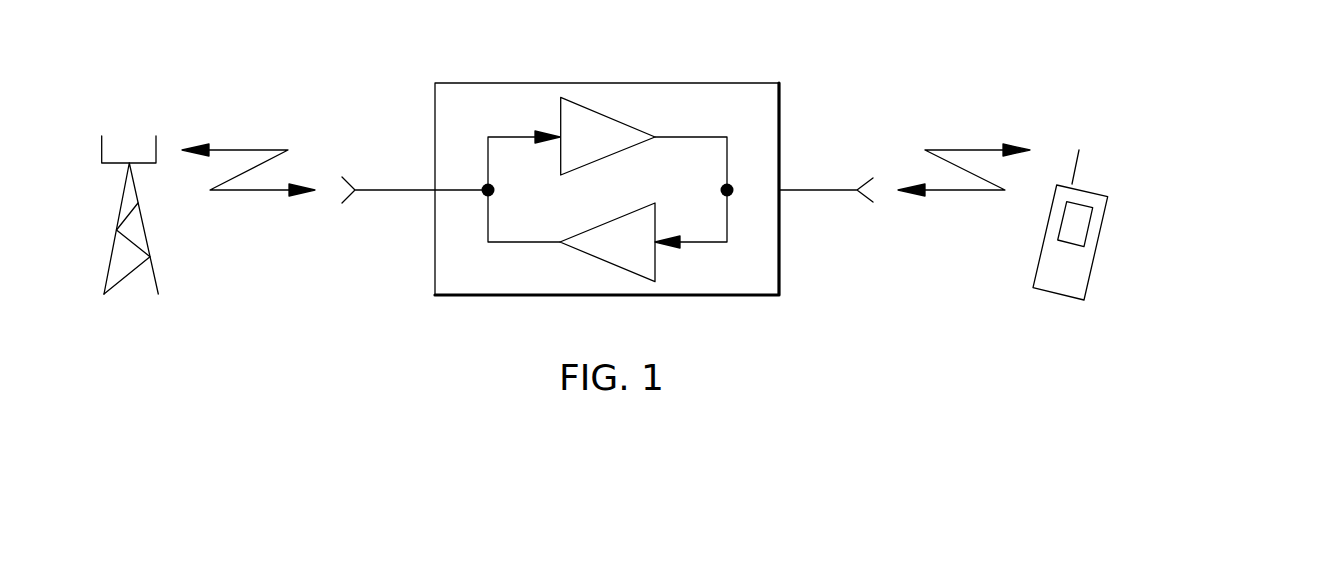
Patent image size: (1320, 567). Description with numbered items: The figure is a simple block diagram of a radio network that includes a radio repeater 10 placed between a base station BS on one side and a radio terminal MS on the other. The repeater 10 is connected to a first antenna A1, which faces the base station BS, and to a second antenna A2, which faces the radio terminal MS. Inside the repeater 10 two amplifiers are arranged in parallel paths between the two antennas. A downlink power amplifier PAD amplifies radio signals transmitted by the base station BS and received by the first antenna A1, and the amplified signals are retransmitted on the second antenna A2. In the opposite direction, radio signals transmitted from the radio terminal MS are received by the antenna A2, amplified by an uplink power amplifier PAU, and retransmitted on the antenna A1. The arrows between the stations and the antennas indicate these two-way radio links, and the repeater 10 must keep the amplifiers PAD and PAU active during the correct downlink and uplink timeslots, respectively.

The radio repeater 10 is at (767, 83).
The first antenna A1 is at (382, 190).
The second antenna A2 is at (833, 190).
The base station BS is at (110, 257).
The radio terminal MS is at (1090, 282).
The downlink power amplifier PAD is at (608, 136).
The uplink power amplifier PAU is at (607, 242).